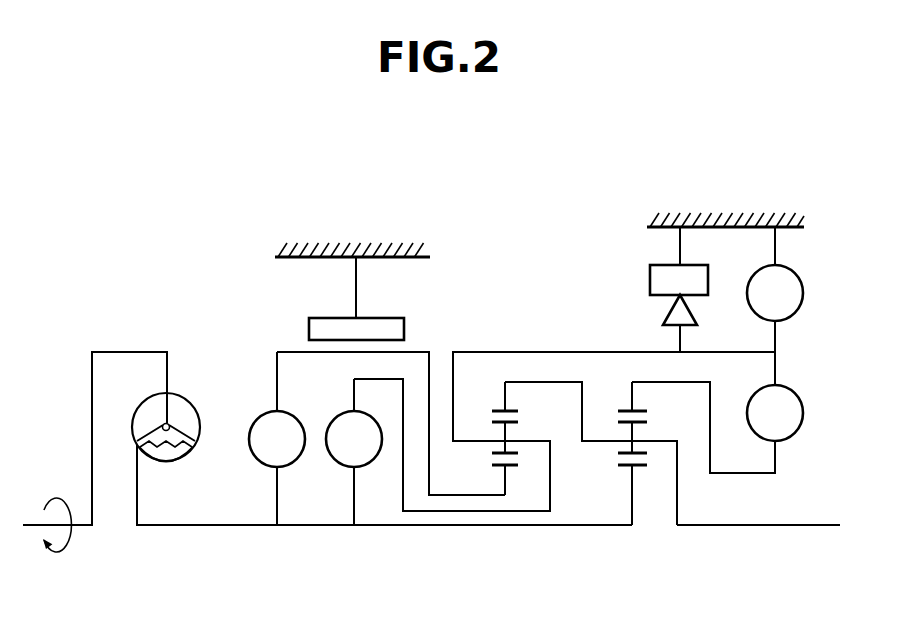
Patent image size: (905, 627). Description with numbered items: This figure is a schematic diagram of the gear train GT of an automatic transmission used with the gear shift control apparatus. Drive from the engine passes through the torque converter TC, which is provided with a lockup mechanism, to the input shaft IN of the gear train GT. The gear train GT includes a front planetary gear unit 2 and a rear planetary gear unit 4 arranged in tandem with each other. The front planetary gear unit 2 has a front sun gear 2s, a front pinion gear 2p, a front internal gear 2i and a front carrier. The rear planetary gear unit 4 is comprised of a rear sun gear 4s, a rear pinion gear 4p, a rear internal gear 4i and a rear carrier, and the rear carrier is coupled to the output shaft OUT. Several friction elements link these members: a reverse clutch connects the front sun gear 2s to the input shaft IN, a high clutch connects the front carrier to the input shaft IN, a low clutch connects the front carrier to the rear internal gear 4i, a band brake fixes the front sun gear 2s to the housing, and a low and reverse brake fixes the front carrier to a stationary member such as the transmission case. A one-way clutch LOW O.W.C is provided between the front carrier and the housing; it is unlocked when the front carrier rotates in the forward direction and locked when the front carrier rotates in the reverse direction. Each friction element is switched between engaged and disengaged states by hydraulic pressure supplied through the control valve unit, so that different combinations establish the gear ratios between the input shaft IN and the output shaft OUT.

The front planetary gear unit 2 is at (479, 470).
The front internal gear 2i is at (497, 409).
The front pinion gear 2p is at (507, 433).
The front sun gear 2s is at (507, 482).
The rear planetary gear unit 4 is at (608, 470).
The rear internal gear 4i is at (627, 409).
The rear pinion gear 4p is at (637, 433).
The rear sun gear 4s is at (637, 470).
The torque converter TC is at (191, 384).
The gear train GT is at (528, 233).
The one-way clutch LOW O.W.C is at (650, 279).
The input shaft IN is at (230, 527).
The output shaft OUT is at (765, 527).